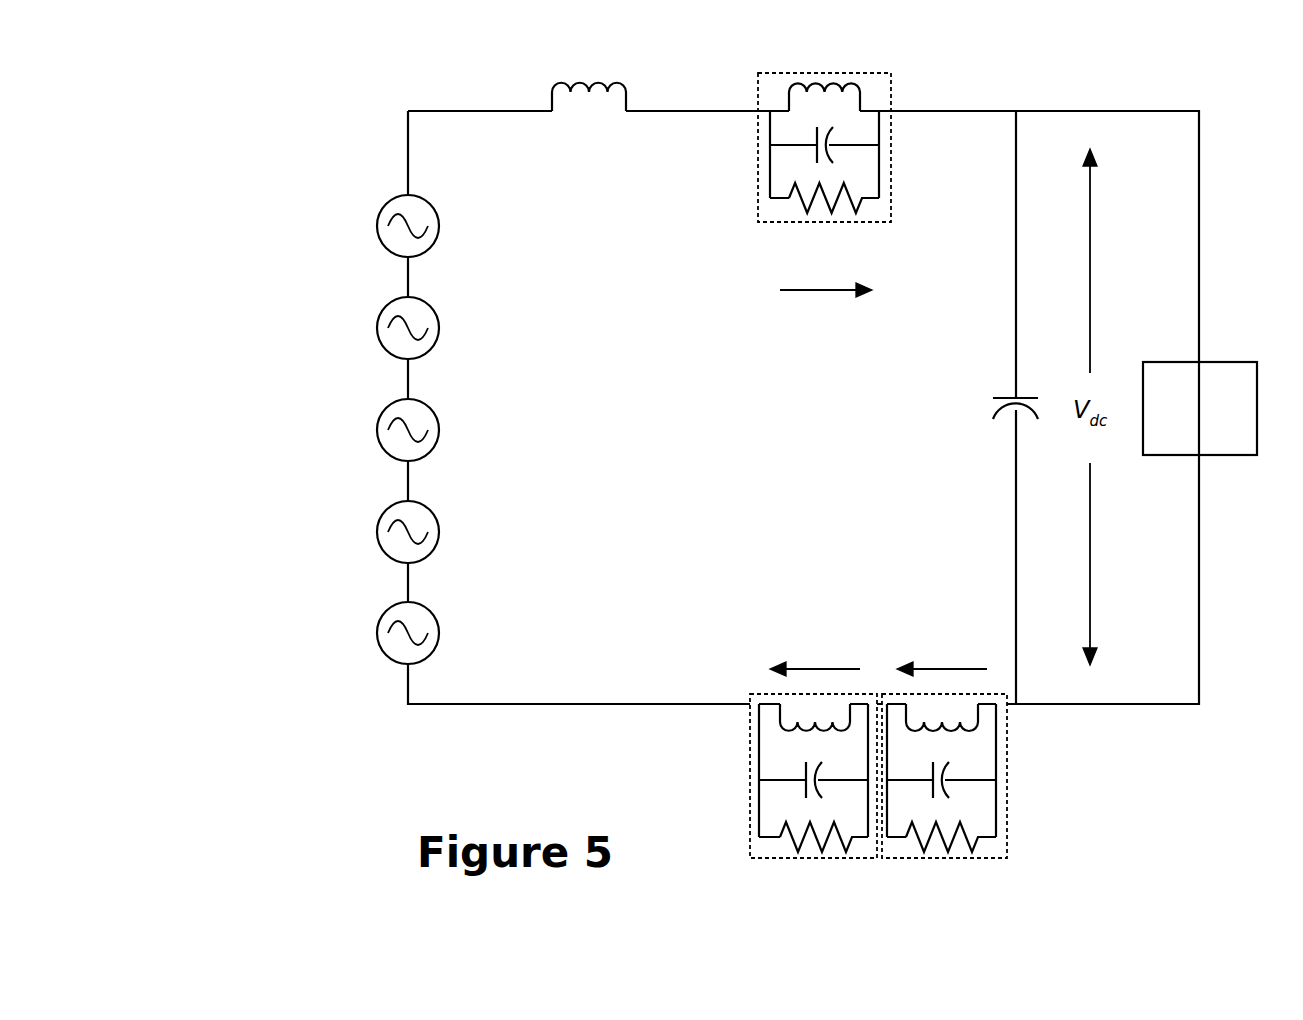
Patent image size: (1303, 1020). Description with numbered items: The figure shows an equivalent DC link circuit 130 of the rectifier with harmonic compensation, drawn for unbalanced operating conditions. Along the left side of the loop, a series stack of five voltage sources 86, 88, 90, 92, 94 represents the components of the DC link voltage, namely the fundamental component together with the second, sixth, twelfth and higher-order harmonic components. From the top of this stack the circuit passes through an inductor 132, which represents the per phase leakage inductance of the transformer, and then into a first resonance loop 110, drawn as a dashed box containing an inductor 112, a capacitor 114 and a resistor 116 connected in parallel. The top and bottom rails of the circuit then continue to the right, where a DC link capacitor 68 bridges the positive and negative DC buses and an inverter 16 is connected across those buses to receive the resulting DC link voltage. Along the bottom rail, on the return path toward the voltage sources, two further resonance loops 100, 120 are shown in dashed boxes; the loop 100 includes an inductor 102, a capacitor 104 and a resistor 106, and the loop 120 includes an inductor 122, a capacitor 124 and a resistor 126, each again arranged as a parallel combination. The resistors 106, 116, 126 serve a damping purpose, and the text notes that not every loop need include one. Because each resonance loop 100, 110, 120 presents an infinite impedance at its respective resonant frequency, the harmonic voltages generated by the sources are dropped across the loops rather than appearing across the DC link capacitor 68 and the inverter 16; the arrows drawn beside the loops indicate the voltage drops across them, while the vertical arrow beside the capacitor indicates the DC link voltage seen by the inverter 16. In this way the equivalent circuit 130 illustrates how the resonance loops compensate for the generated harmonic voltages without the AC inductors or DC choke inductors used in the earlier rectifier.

The equivalent DC link circuit 130 is at (253, 112).
The inductor 132 is at (582, 83).
The voltage source 94 is at (440, 226).
The voltage source 92 is at (440, 328).
The voltage source 90 is at (440, 430).
The voltage source 88 is at (440, 532).
The voltage source 86 is at (440, 633).
The resonance loop 110 is at (859, 155).
The inductor 112 is at (862, 100).
The capacitor 114 is at (862, 143).
The resistor 116 is at (863, 198).
The DC link capacitor 68 is at (1000, 397).
The inverter 16 is at (1184, 437).
The resonance loop 100 is at (776, 768).
The inductor 102 is at (778, 713).
The capacitor 104 is at (778, 778).
The resistor 106 is at (773, 835).
The resonance loop 120 is at (982, 768).
The inductor 122 is at (978, 715).
The capacitor 124 is at (982, 777).
The resistor 126 is at (982, 834).